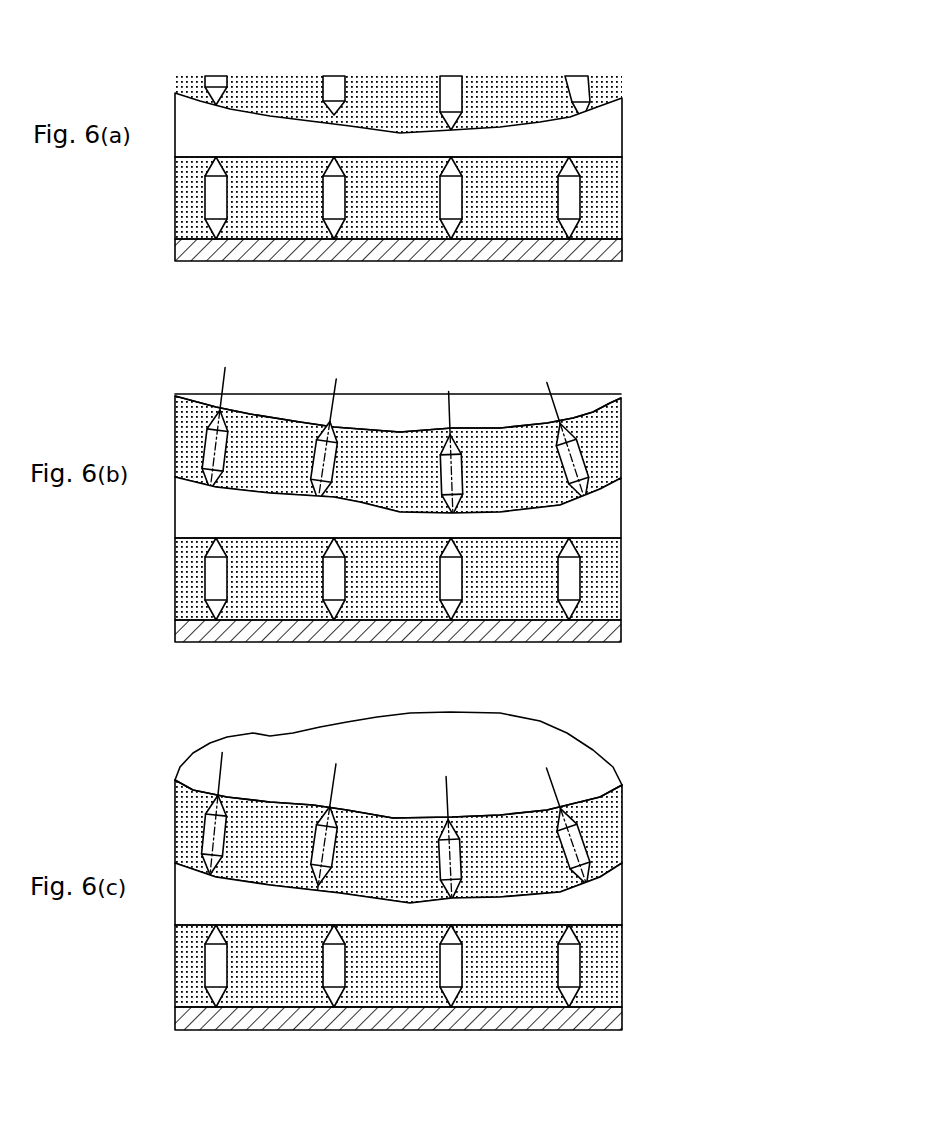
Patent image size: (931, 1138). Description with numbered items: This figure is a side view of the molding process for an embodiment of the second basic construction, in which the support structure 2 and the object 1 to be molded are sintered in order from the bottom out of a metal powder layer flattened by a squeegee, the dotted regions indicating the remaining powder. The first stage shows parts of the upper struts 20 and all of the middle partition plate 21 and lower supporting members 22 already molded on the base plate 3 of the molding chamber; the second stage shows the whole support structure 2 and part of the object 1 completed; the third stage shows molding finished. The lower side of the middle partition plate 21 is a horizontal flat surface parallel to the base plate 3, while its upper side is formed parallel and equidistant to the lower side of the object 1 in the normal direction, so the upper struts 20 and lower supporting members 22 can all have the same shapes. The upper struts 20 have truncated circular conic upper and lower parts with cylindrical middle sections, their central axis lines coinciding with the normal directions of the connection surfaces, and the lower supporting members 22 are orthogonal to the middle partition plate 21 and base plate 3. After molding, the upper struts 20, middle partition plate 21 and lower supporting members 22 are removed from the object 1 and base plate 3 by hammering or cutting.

In FIG. 6B, the object to be molded 1 is at (547, 407).
In FIG. 6C, the object to be molded 1 is at (580, 780).
In FIG. 6A, the support structure 2 is at (510, 138).
In FIG. 6B, the support structure 2 is at (510, 493).
In FIG. 6C, the support structure 2 is at (510, 879).
In FIG. 6A, the upper struts 20 is at (582, 90).
In FIG. 6B, the upper struts 20 is at (580, 447).
In FIG. 6C, the upper struts 20 is at (573, 838).
In FIG. 6A, the middle partition plate 21 is at (608, 135).
In FIG. 6B, the middle partition plate 21 is at (608, 515).
In FIG. 6C, the middle partition plate 21 is at (606, 902).
In FIG. 6A, the lower supporting members 22 is at (567, 212).
In FIG. 6B, the lower supporting members 22 is at (567, 592).
In FIG. 6C, the lower supporting members 22 is at (563, 985).
In FIG. 6A, the base plate 3 is at (580, 250).
In FIG. 6B, the base plate 3 is at (580, 630).
In FIG. 6C, the base plate 3 is at (580, 1022).